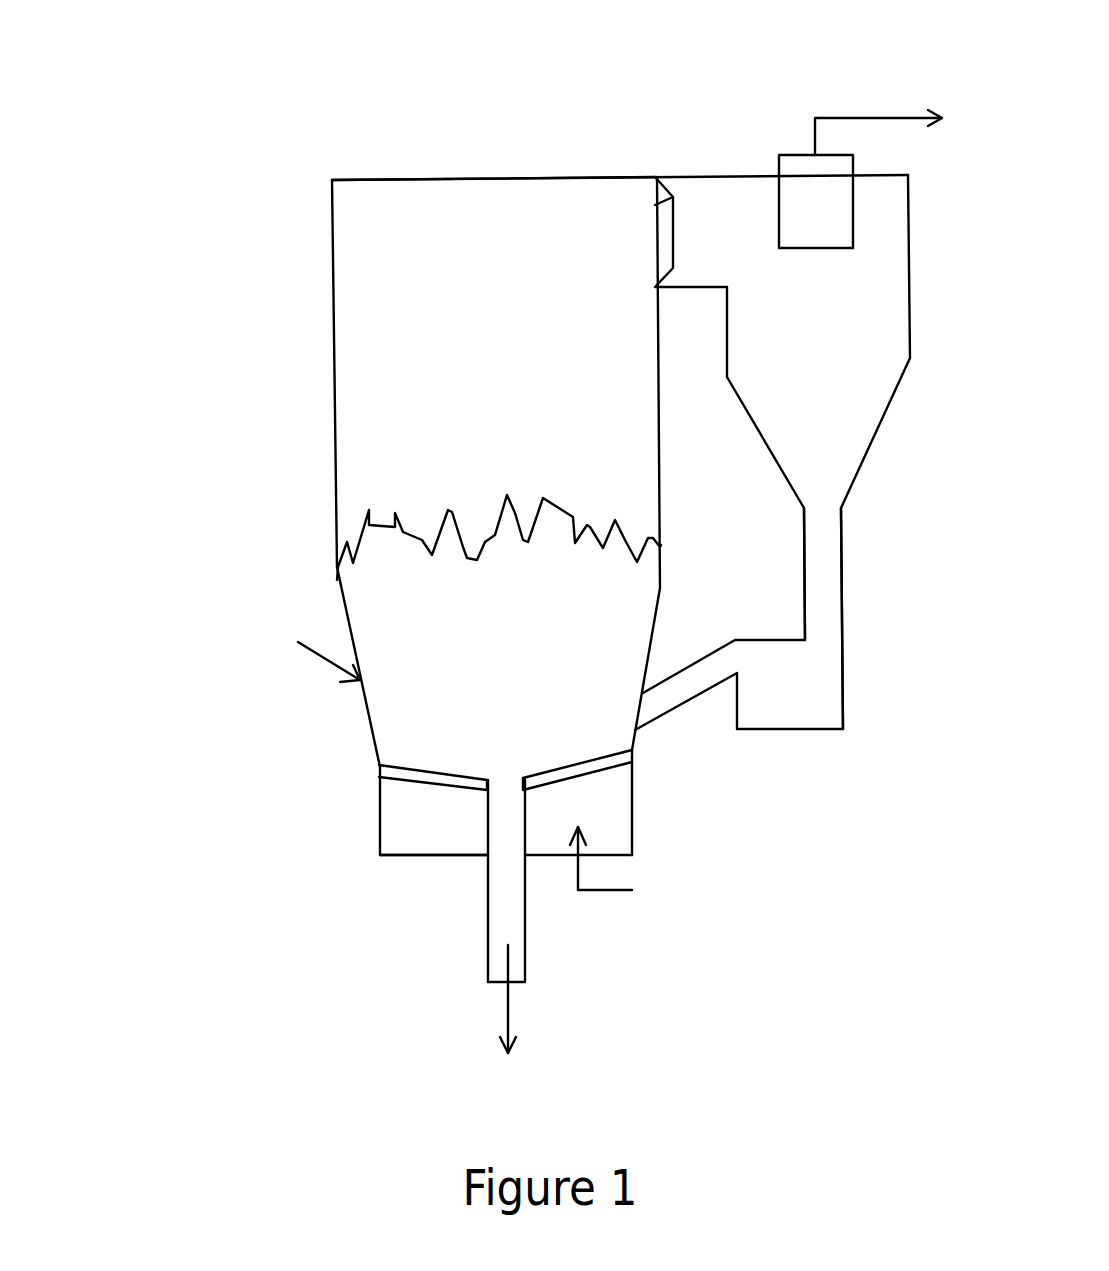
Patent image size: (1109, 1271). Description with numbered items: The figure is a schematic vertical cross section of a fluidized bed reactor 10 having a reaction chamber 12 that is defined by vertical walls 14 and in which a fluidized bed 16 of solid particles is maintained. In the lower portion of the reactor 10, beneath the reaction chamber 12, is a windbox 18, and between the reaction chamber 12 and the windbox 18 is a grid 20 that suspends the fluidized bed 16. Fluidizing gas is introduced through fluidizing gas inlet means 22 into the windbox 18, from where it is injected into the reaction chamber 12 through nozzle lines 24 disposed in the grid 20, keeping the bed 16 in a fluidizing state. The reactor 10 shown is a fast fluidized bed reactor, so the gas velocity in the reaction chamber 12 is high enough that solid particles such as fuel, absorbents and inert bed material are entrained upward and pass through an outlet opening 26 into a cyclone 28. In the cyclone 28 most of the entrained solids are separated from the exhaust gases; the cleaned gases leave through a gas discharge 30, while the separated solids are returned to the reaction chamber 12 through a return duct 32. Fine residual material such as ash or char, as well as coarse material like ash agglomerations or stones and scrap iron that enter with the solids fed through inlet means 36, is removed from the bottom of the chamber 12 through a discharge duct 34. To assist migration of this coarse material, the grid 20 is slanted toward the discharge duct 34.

The fluidized bed reactor 10 is at (530, 536).
The reaction chamber 12 is at (620, 288).
The vertical walls 14 is at (333, 463).
The fluidized bed 16 is at (499, 578).
The windbox 18 is at (598, 805).
The grid 20 is at (440, 783).
The fluidizing gas inlet means 22 is at (592, 890).
The nozzle lines 24 is at (413, 766).
The outlet opening 26 is at (673, 197).
The cyclone 28 is at (772, 452).
The gas discharge 30 is at (832, 117).
The return duct 32 is at (833, 617).
The discharge duct 34 is at (498, 873).
The inlet means 36 is at (313, 657).